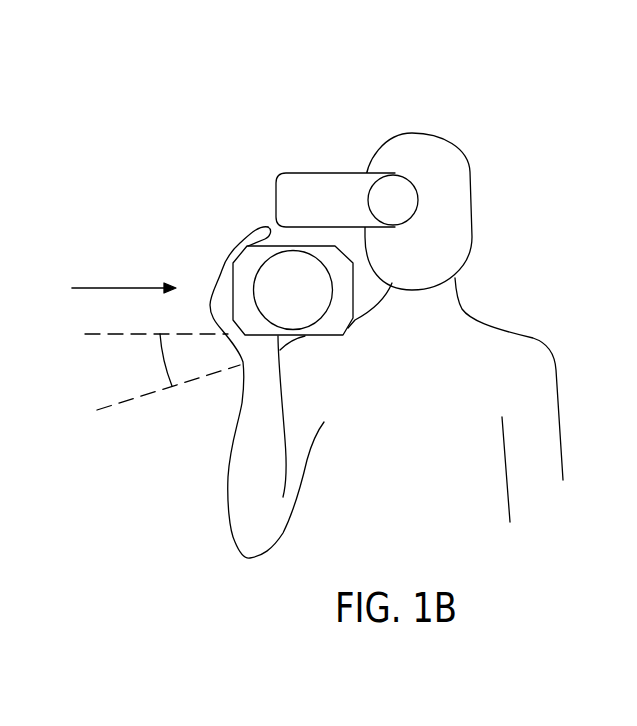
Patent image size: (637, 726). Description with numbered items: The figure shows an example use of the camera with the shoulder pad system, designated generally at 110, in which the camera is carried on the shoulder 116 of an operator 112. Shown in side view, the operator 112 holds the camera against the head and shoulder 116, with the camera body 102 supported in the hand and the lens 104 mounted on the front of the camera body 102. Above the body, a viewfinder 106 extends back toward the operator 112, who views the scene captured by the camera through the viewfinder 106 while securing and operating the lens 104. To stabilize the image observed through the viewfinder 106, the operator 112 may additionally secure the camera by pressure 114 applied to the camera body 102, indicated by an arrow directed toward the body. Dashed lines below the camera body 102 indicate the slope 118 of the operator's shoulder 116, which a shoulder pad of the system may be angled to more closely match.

The camera body 102 is at (245, 290).
The lens 104 is at (282, 267).
The viewfinder 106 is at (301, 188).
The example use of the camera 110 is at (89, 90).
The operator 112 is at (448, 165).
The pressure 114 is at (90, 286).
The shoulder 116 is at (365, 329).
The slope 118 is at (160, 364).